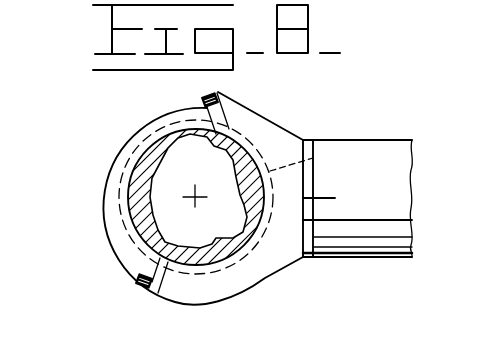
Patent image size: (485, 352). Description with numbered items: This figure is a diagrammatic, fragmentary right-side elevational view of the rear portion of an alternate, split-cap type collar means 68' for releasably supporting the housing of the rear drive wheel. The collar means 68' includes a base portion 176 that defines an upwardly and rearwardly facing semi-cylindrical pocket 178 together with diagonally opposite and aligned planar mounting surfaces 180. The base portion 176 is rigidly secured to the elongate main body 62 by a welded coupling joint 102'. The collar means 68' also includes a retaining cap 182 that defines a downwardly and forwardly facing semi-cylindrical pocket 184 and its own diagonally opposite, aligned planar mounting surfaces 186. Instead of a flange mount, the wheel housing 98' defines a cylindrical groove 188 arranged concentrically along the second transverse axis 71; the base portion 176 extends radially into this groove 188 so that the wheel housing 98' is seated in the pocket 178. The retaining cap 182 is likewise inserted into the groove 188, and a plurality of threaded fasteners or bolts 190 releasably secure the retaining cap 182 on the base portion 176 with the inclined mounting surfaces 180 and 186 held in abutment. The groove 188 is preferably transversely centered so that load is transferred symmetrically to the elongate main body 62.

The collar means 68' is at (94, 153).
The elongate main body 62 is at (382, 198).
The second transverse axis 71 is at (197, 205).
The wheel housing 98' is at (308, 158).
The welded coupling joint 102' is at (357, 258).
The base portion 176 is at (265, 133).
The semi-cylindrical pocket 178 is at (244, 252).
The planar mounting surfaces 180 is at (219, 95).
The retaining cap 182 is at (113, 224).
The semi-cylindrical pocket 184 is at (160, 142).
The planar mounting surfaces 186 is at (226, 108).
The cylindrical groove 188 is at (135, 188).
The threaded fasteners or bolts 190 is at (204, 96).